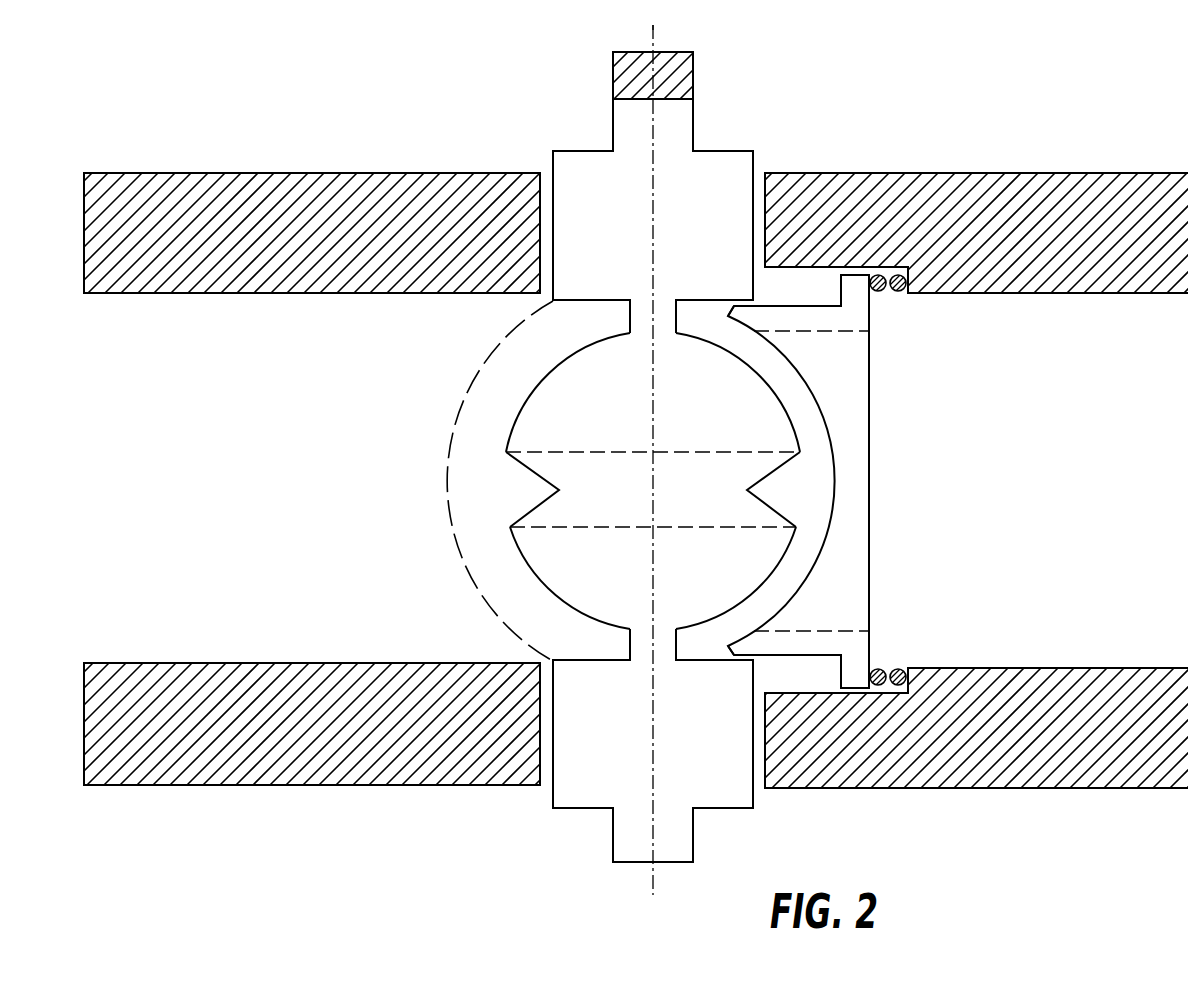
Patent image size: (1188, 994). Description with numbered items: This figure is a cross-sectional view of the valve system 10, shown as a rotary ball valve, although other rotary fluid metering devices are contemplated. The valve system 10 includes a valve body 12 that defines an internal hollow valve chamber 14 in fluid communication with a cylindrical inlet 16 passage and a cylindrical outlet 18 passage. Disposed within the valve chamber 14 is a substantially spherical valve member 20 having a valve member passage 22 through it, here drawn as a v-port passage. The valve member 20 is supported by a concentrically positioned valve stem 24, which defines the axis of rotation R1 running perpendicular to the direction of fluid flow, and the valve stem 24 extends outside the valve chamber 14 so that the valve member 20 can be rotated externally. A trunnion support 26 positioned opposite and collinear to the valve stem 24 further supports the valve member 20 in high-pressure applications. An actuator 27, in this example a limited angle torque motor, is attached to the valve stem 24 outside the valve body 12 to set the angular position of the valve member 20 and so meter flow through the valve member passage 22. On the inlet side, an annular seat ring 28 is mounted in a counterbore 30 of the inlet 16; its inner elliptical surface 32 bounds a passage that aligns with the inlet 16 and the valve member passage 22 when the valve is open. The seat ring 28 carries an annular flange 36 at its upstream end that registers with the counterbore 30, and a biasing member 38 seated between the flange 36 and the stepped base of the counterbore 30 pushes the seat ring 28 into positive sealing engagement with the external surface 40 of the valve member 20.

The valve system 10 is at (888, 57).
The valve body 12 is at (313, 173).
The valve chamber 14 is at (450, 419).
The inlet 16 is at (1094, 506).
The outlet 18 is at (282, 506).
The valve member 20 is at (586, 334).
The valve member passage 22 is at (667, 503).
The valve stem 24 is at (722, 150).
The trunnion support 26 is at (647, 759).
The actuator 27 is at (694, 72).
The annular seat ring 28 is at (886, 488).
The counterbore 30 is at (804, 280).
The inner elliptical surface 32 is at (841, 339).
The annular flange 36 is at (870, 315).
The biasing member 38 is at (898, 308).
The external surface 40 is at (716, 625).
The axis of rotation R1 is at (656, 36).